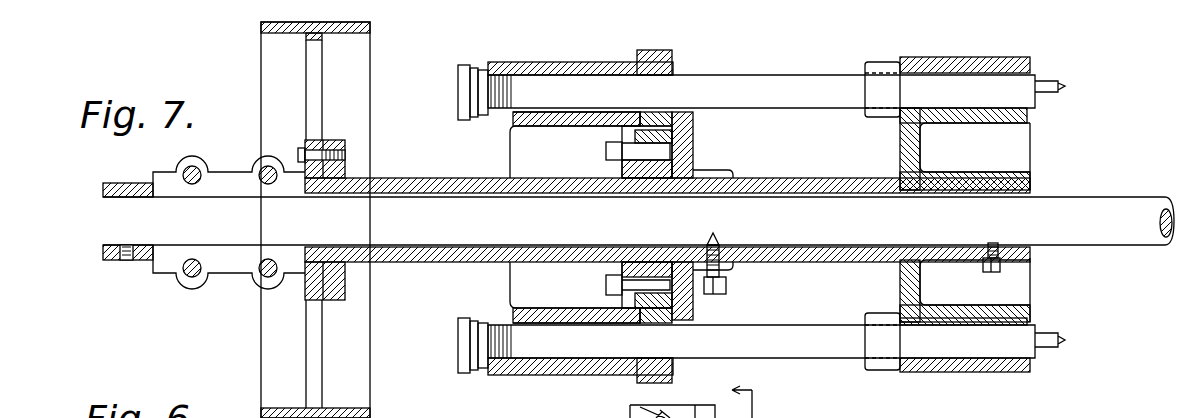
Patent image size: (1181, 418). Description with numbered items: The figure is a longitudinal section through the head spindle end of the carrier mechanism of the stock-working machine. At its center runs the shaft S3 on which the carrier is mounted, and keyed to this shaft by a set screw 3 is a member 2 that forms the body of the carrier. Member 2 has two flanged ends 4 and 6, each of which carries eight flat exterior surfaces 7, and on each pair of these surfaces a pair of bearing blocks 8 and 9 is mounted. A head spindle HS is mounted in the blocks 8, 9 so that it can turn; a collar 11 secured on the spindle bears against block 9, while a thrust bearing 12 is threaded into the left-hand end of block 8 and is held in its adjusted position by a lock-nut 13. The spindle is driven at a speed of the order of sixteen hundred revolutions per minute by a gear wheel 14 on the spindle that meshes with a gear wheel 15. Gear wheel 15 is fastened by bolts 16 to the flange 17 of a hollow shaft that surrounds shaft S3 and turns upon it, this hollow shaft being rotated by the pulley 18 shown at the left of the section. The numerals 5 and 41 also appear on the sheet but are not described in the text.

In FIG. 7, the pulley 18 is at (315, 220).
In FIG. 7, the shaft S3 is at (638, 221).
In FIG. 7, the bracket 5 is at (270, 221).
In FIG. 7, the member 2 is at (766, 177).
In FIG. 7, the flanged end 6 is at (982, 124).
In FIG. 6, the flanged end 6 is at (750, 396).
In FIG. 7, the block 9 is at (960, 57).
In FIG. 7, the flat exterior surface 7 is at (1030, 97).
In FIG. 7, the collar 11 is at (881, 62).
In FIG. 7, the head spindle HS is at (773, 75).
In FIG. 7, the block 8 is at (607, 62).
In FIG. 7, the gear wheel 14 is at (658, 60).
In FIG. 7, the thrust bearing 12 is at (458, 90).
In FIG. 7, the lock-nut 13 is at (482, 70).
In FIG. 7, the flanged end 4 is at (570, 128).
In FIG. 7, the gear wheel 15 is at (694, 138).
In FIG. 7, the flange 17 is at (606, 156).
In FIG. 7, the bolt 16 is at (606, 285).
In FIG. 7, the set screw 3 is at (718, 238).
In FIG. 6, the valve 41 is at (630, 408).